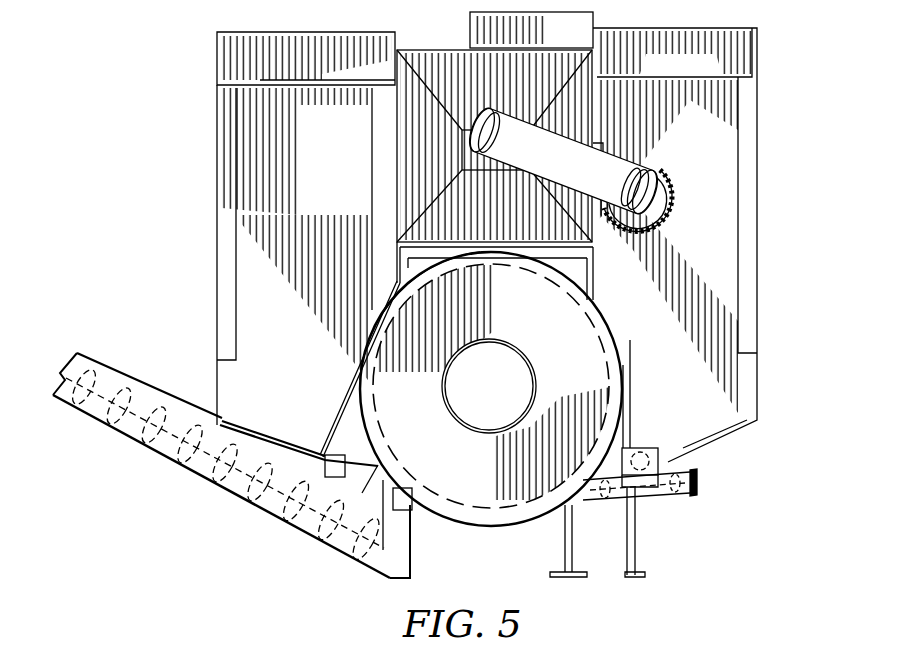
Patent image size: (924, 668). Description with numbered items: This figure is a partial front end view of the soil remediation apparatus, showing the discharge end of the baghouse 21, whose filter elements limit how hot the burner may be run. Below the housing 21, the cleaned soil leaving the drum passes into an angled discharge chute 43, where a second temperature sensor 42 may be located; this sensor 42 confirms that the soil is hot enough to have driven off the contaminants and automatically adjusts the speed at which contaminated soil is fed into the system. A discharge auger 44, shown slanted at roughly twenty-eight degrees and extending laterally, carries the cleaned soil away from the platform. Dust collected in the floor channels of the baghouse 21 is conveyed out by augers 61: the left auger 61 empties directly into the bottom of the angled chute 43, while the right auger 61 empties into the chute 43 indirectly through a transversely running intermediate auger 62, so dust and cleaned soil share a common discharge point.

The baghouse 21 is at (766, 122).
The second temperature sensor 42 is at (387, 574).
The discharge chute 43 is at (192, 471).
The discharge auger 44 is at (100, 422).
The augers 61 is at (323, 457).
The intermediate auger 62 is at (657, 490).